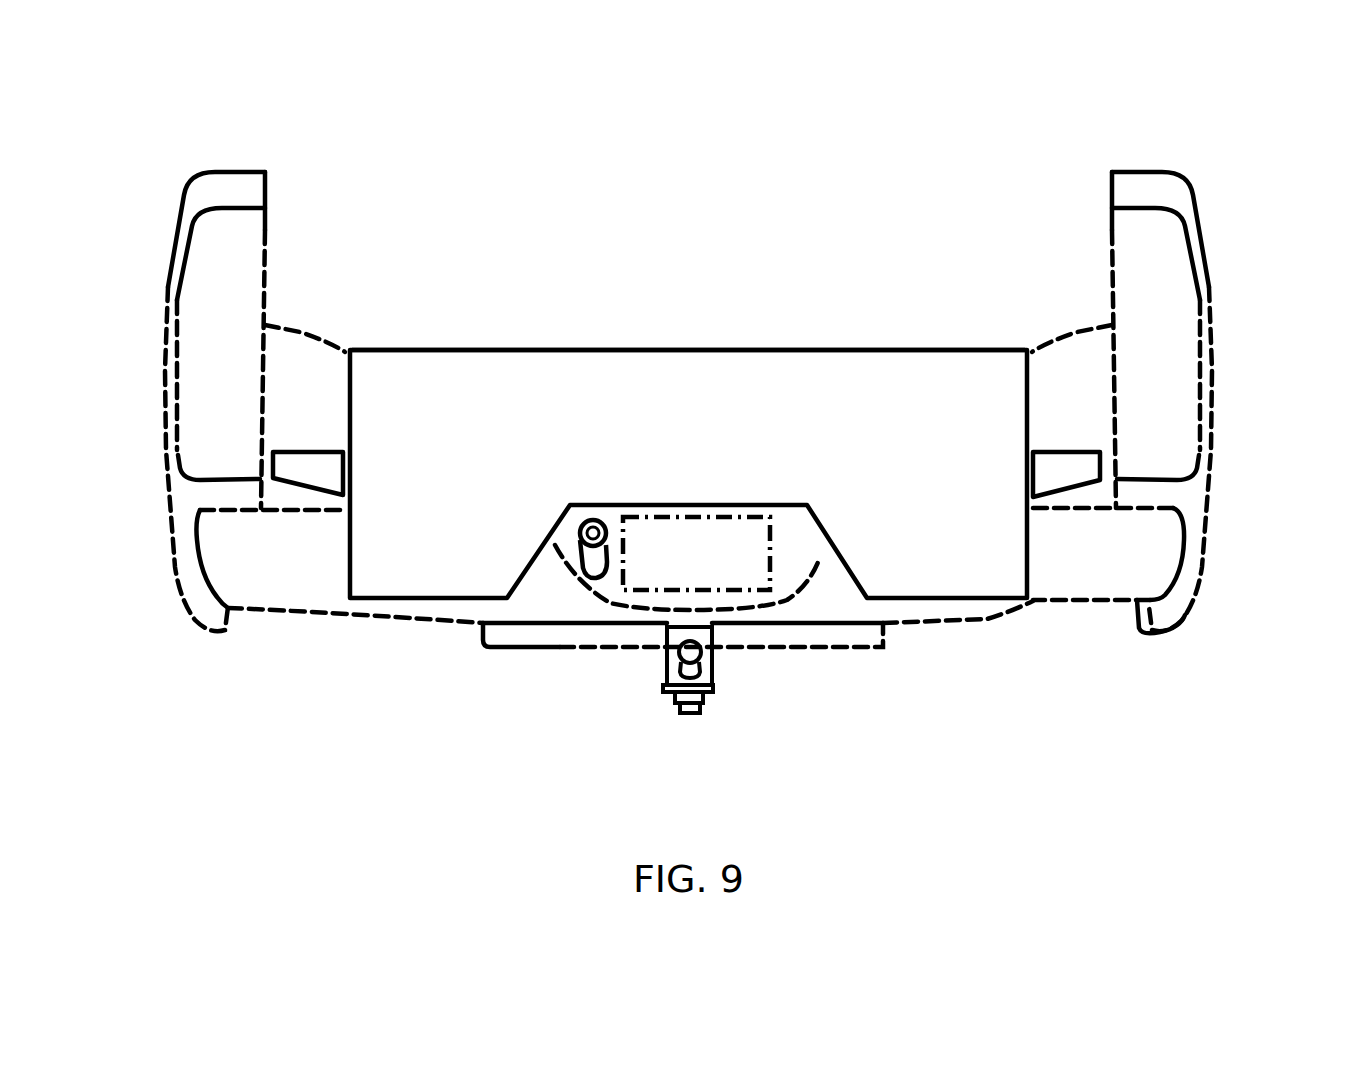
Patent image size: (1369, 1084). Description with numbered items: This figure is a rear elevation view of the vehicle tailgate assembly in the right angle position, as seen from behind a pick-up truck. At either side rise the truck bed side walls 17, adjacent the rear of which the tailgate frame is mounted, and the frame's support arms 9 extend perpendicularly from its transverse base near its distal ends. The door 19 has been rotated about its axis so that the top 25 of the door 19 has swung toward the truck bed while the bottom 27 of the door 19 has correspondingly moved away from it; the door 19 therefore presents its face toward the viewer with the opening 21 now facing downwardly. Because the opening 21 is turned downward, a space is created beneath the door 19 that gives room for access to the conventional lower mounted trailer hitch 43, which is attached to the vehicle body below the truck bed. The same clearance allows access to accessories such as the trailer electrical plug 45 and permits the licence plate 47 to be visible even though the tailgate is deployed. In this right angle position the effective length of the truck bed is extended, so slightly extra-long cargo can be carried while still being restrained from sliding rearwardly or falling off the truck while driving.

The support arms 9 is at (308, 472).
The side walls 17 is at (265, 196).
The door 19 is at (977, 381).
The opening 21 is at (792, 543).
The top of the door 25 is at (872, 348).
The bottom of the door 27 is at (977, 600).
The trailer hitch 43 is at (667, 680).
The trailer electrical plug 45 is at (577, 537).
The licence plate 47 is at (720, 560).